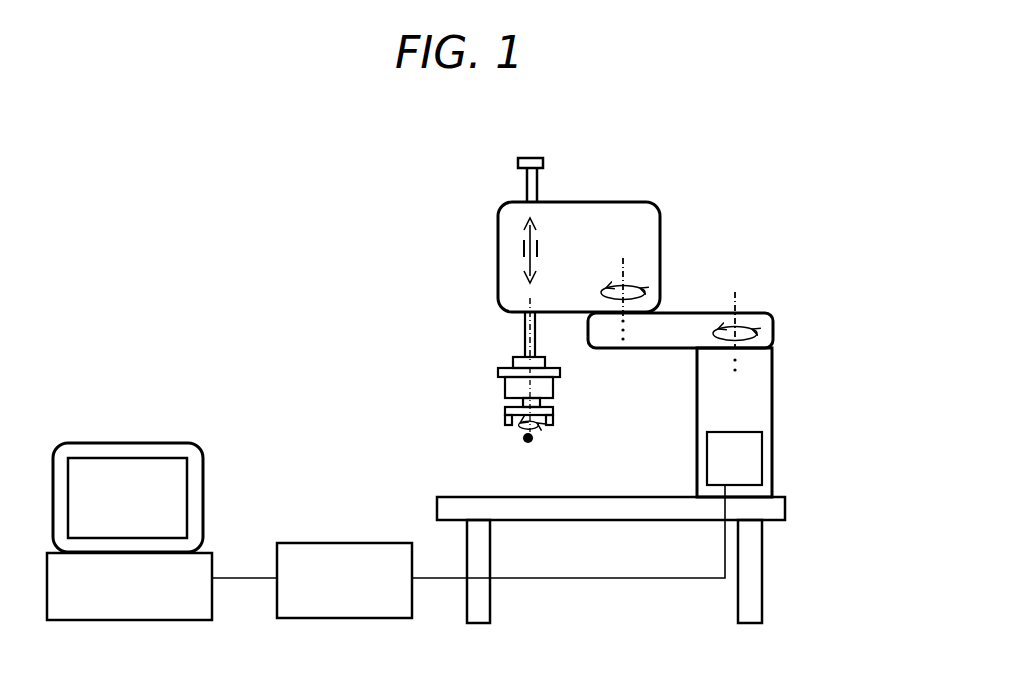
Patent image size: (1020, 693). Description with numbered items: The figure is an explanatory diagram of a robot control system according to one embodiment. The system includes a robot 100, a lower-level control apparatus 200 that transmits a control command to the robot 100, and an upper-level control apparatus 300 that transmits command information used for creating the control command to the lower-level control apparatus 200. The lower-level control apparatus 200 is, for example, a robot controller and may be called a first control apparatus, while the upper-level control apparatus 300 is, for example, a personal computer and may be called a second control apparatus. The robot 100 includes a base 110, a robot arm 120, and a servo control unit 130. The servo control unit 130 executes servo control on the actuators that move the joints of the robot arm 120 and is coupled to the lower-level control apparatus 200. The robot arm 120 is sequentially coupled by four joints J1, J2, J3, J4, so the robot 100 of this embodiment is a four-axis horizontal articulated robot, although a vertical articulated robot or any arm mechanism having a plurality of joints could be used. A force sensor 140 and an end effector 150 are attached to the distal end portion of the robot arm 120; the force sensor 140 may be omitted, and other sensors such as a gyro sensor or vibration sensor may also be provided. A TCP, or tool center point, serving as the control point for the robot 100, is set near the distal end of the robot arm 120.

The robot 100 is at (812, 176).
The base 110 is at (775, 353).
The robot arm 120 is at (760, 313).
The servo control unit 130 is at (754, 432).
The force sensor 140 is at (555, 385).
The end effector 150 is at (553, 420).
The lower-level control apparatus 200 is at (323, 543).
The upper-level control apparatus 300 is at (93, 443).
The joint J1 is at (733, 303).
The joint J2 is at (621, 272).
The joint J3 is at (538, 248).
The joint J4 is at (527, 303).
The tool center point TCP is at (523, 441).